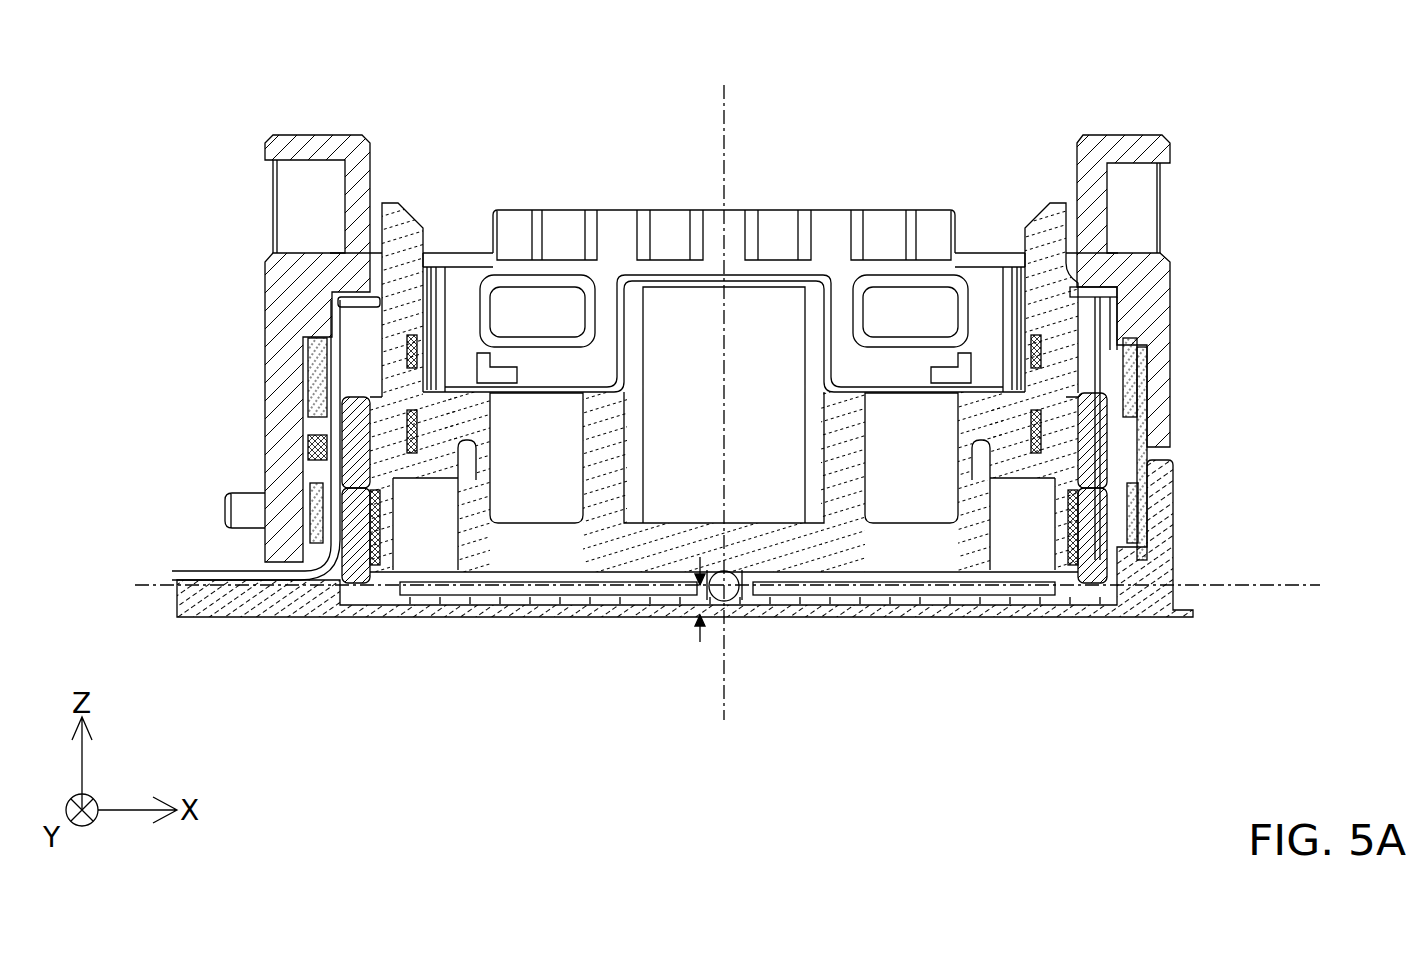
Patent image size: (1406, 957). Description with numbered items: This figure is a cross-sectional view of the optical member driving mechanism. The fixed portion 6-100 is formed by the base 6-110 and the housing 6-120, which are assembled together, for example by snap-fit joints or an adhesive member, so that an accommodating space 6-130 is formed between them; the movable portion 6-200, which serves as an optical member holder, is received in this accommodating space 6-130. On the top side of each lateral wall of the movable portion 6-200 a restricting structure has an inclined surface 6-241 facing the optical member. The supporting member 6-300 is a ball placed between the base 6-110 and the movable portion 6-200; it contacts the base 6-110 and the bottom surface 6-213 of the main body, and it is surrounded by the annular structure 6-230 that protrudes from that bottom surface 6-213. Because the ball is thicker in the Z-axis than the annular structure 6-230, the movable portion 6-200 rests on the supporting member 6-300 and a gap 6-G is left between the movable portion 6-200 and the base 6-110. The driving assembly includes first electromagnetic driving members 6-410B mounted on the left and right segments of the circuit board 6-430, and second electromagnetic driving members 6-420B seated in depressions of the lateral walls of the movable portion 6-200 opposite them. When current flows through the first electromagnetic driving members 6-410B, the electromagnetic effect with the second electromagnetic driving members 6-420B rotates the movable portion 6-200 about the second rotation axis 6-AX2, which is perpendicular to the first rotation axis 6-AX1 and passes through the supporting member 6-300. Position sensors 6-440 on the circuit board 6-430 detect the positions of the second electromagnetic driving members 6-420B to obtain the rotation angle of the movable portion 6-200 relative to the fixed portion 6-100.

The second rotation axis 6-AX2 is at (723, 375).
The first rotation axis 6-AX1 is at (680, 587).
The fixed portion 6-100 is at (1300, 400).
The base 6-110 is at (1160, 496).
The housing 6-120 is at (1157, 413).
The accommodating space 6-130 is at (1088, 368).
The movable portion 6-200 is at (1052, 312).
The bottom surface 6-213 is at (946, 572).
The annular structure 6-230 is at (750, 593).
The inclined surface 6-241 is at (1043, 204).
The supporting member 6-300 is at (739, 583).
The first electromagnetic driving member 6-410B is at (1132, 560).
The second electromagnetic driving member 6-420B is at (1097, 565).
The circuit board 6-430 is at (1147, 542).
The position sensor 6-440 is at (310, 448).
The gap 6-G is at (700, 630).